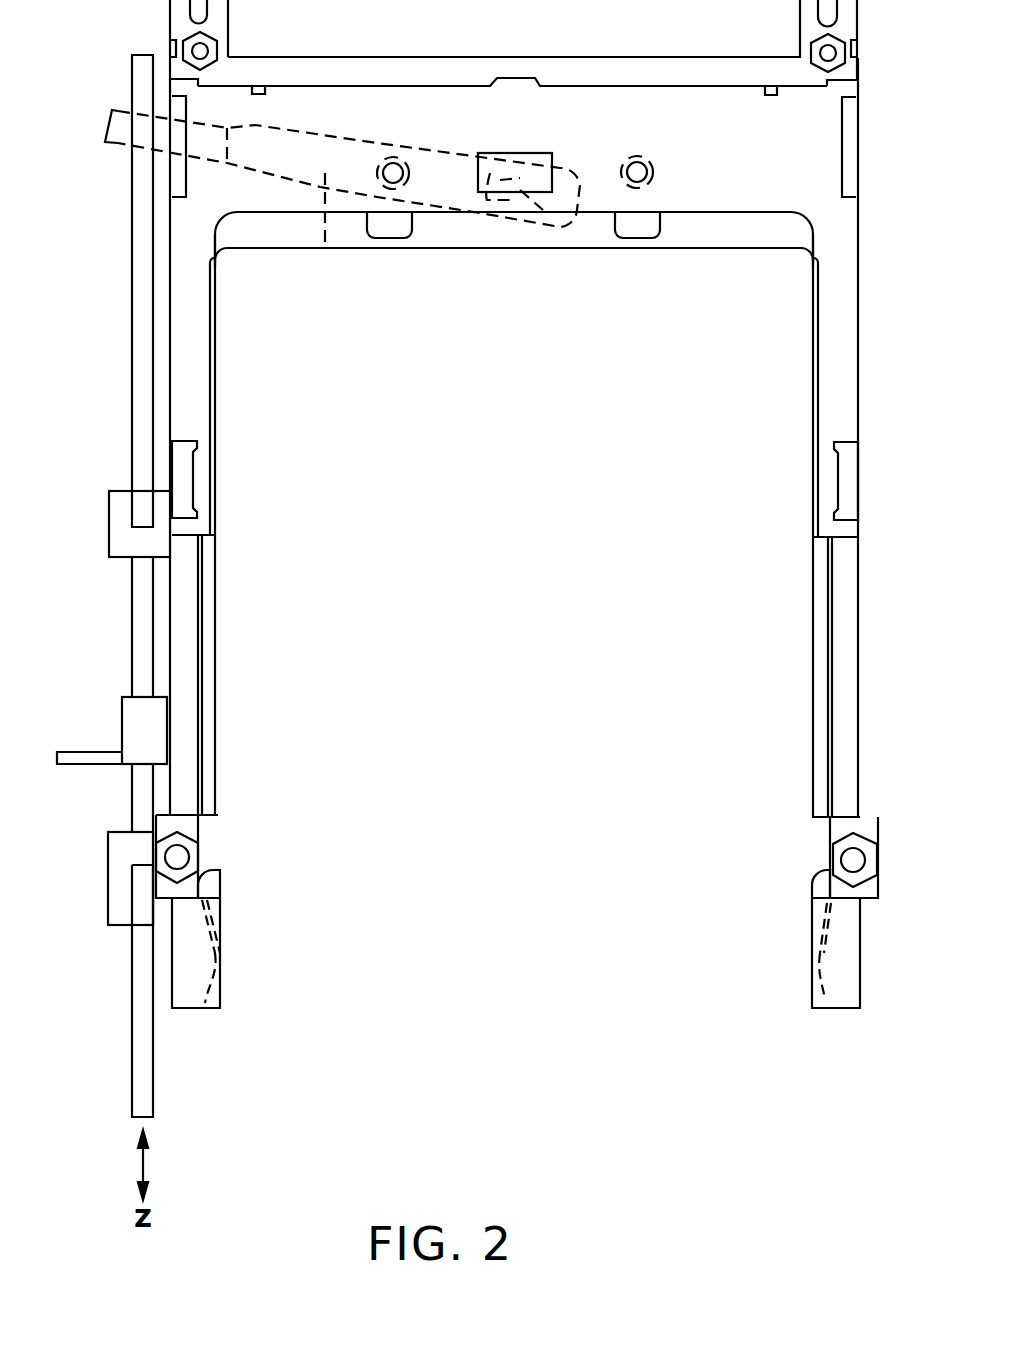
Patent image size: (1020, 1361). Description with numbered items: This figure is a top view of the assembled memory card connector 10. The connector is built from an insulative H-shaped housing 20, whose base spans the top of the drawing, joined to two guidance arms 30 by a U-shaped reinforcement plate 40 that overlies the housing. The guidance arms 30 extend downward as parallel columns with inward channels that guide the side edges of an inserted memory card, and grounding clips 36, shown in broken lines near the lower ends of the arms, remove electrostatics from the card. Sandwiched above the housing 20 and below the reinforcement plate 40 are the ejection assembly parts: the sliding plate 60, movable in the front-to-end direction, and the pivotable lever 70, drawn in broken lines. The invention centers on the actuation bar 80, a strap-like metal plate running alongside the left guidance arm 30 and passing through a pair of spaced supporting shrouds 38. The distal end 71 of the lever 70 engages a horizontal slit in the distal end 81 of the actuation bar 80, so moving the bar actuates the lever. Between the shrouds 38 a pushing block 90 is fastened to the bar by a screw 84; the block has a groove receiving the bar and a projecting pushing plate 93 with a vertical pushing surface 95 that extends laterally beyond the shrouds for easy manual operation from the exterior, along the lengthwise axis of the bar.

The memory card connector 10 is at (498, 899).
The insulative H-shaped housing 20 is at (447, 67).
The guidance arms 30 is at (195, 668).
The grounding clips 36 is at (213, 930).
The supporting shrouds 38 is at (120, 513).
The U-shaped reinforcement plate 40 is at (728, 185).
The sliding plate 60 is at (518, 235).
The pivotable lever 70 is at (325, 247).
The distal end of the pivotable lever 71 is at (118, 133).
The actuation bar 80 is at (143, 610).
The distal end of the actuation bar 81 is at (143, 87).
The screw 84 is at (122, 722).
The pushing block 90 is at (122, 771).
The projecting pushing plate 93 is at (85, 755).
The vertical pushing surface 95 is at (75, 765).